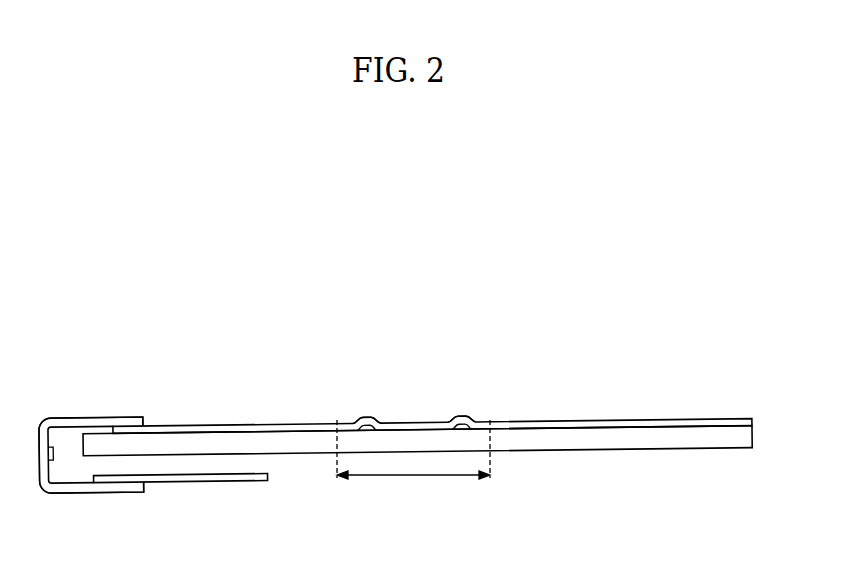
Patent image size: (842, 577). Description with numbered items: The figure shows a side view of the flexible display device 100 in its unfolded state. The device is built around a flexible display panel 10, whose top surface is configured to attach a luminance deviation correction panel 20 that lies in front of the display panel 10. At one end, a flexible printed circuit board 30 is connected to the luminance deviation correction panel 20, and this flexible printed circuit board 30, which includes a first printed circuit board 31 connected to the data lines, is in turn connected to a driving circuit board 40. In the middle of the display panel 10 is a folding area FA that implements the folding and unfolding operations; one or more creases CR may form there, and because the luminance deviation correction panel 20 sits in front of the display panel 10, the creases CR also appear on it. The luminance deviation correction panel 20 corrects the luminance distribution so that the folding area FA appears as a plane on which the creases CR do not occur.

The flexible display device 100 is at (438, 186).
The flexible display panel 10 is at (585, 441).
The luminance deviation correction panel 20 is at (581, 420).
The flexible printed circuit board 30 is at (88, 417).
The first printed circuit board 31 is at (91, 455).
The driving circuit board 40 is at (219, 478).
The crease CR is at (452, 420).
The folding area FA is at (413, 464).